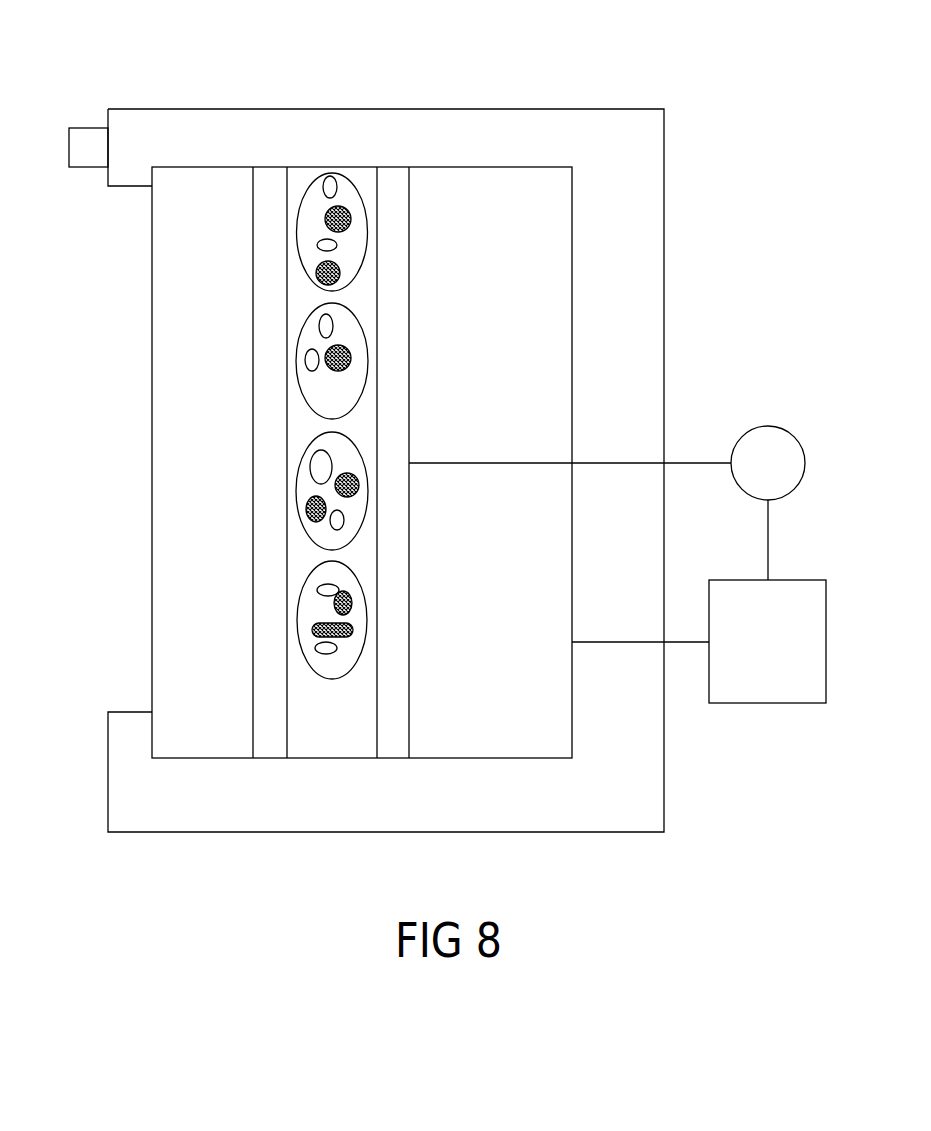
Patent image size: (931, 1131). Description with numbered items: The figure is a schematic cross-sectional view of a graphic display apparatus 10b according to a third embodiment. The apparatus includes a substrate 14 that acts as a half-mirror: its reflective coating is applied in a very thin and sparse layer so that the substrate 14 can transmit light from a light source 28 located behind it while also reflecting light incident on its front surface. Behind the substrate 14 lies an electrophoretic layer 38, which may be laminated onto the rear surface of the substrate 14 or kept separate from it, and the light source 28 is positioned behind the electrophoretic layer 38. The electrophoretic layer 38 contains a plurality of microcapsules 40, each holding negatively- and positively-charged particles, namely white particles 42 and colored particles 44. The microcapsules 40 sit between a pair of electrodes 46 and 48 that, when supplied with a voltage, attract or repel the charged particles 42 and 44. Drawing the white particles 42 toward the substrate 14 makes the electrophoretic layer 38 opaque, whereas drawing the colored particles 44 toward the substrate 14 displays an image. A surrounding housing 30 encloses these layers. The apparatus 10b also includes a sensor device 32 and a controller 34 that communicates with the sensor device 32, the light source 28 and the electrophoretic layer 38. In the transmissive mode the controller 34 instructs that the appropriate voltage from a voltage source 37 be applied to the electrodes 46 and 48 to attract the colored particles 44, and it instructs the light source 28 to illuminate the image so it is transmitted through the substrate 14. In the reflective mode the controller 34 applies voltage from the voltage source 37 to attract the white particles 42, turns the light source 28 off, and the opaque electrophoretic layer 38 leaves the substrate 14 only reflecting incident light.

The graphic display apparatus 10b is at (724, 92).
The substrate 14 is at (187, 496).
The light source 28 is at (493, 311).
The housing 30 is at (518, 128).
The sensor device 32 is at (90, 127).
The controller 34 is at (767, 703).
The voltage source 37 is at (768, 426).
The electrophoretic layer 38 is at (326, 733).
The microcapsules 40 is at (295, 362).
The white particles 42 is at (328, 190).
The colored particles 44 is at (335, 370).
The electrode 46 is at (253, 563).
The electrode 48 is at (392, 196).